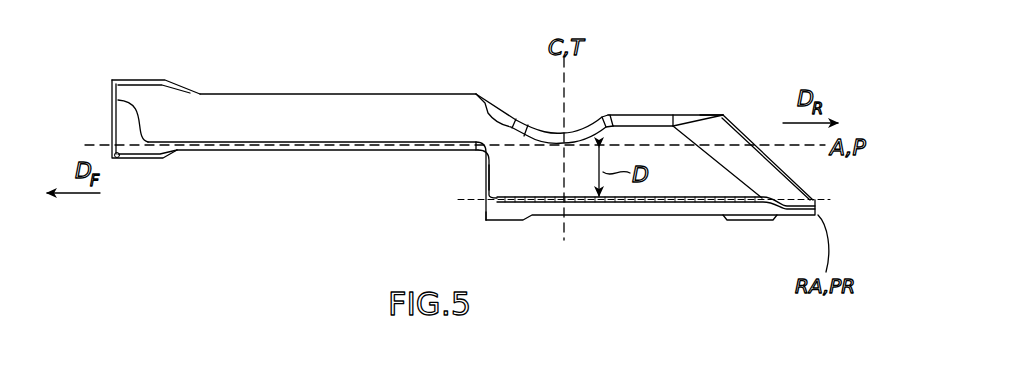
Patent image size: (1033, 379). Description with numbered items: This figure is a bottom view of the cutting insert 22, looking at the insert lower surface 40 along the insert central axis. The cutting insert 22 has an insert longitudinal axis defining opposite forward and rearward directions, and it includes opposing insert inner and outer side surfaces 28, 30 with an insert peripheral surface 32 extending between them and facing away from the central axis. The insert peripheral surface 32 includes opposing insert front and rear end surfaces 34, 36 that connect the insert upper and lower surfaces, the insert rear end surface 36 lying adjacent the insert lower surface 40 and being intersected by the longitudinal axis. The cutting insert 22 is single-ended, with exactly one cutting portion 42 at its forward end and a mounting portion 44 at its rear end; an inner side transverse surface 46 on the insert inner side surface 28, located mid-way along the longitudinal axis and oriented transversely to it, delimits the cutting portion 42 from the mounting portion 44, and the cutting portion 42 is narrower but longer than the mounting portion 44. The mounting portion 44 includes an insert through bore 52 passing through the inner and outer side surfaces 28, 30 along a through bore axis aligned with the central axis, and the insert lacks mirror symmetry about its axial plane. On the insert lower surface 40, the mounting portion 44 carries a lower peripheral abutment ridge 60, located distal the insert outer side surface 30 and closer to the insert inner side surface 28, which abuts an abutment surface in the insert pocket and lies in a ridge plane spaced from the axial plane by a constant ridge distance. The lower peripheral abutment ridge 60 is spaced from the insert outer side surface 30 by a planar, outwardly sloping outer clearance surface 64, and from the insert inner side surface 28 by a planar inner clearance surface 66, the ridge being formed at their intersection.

The cutting insert 22 is at (745, 48).
The insert inner side surface 28 is at (652, 215).
The insert outer side surface 30 is at (433, 93).
The insert peripheral surface 32 is at (380, 120).
The insert front end surface 34 is at (113, 112).
The insert rear end surface 36 is at (782, 167).
The insert lower surface 40 is at (693, 170).
The cutting portion 42 is at (276, 190).
The mounting portion 44 is at (648, 255).
The inner side transverse surface 46 is at (487, 175).
The insert through bore 52 is at (578, 117).
The lower peripheral abutment ridge 60 is at (617, 200).
The outer clearance surface 64 is at (545, 172).
The inner clearance surface 66 is at (549, 208).